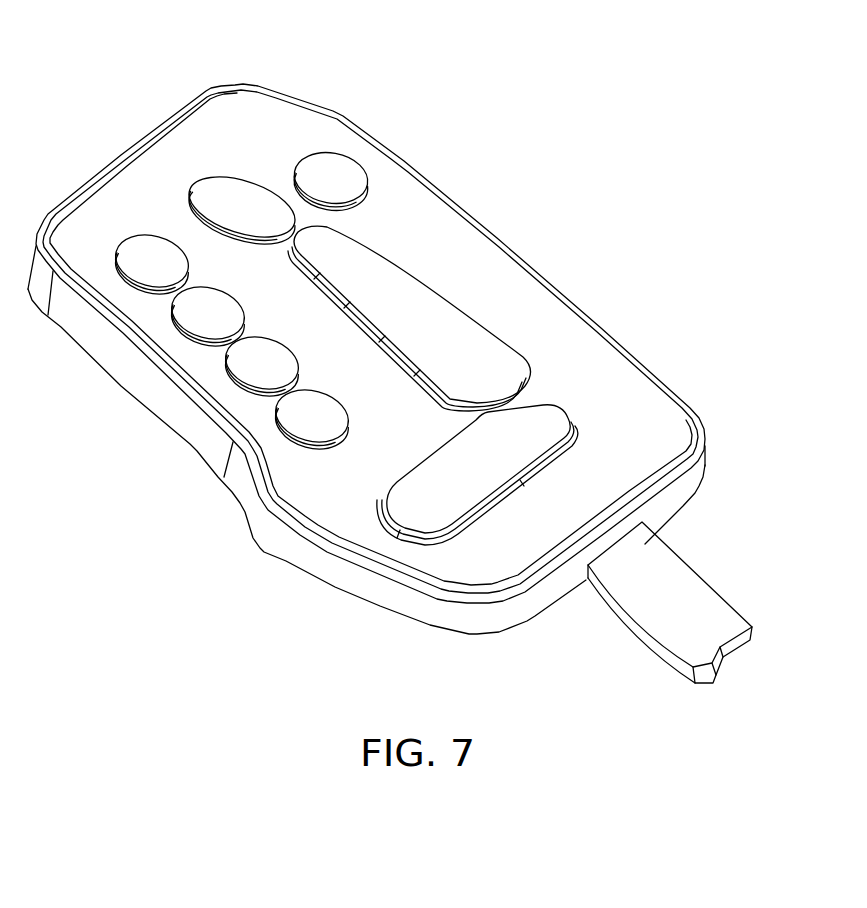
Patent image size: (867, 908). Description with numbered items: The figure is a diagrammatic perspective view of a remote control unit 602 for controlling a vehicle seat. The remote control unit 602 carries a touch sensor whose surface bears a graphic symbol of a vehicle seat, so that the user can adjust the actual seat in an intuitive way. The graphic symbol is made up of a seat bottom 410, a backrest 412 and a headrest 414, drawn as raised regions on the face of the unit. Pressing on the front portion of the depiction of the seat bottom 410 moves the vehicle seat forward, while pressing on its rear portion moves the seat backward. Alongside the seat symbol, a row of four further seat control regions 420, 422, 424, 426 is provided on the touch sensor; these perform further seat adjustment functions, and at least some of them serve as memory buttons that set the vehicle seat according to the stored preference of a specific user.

The seat bottom 410 is at (522, 437).
The backrest 412 is at (358, 265).
The headrest 414 is at (225, 193).
The seat control region 420 is at (142, 272).
The seat control region 422 is at (205, 323).
The seat control region 424 is at (258, 365).
The seat control region 426 is at (307, 427).
The remote control unit 602 is at (487, 267).